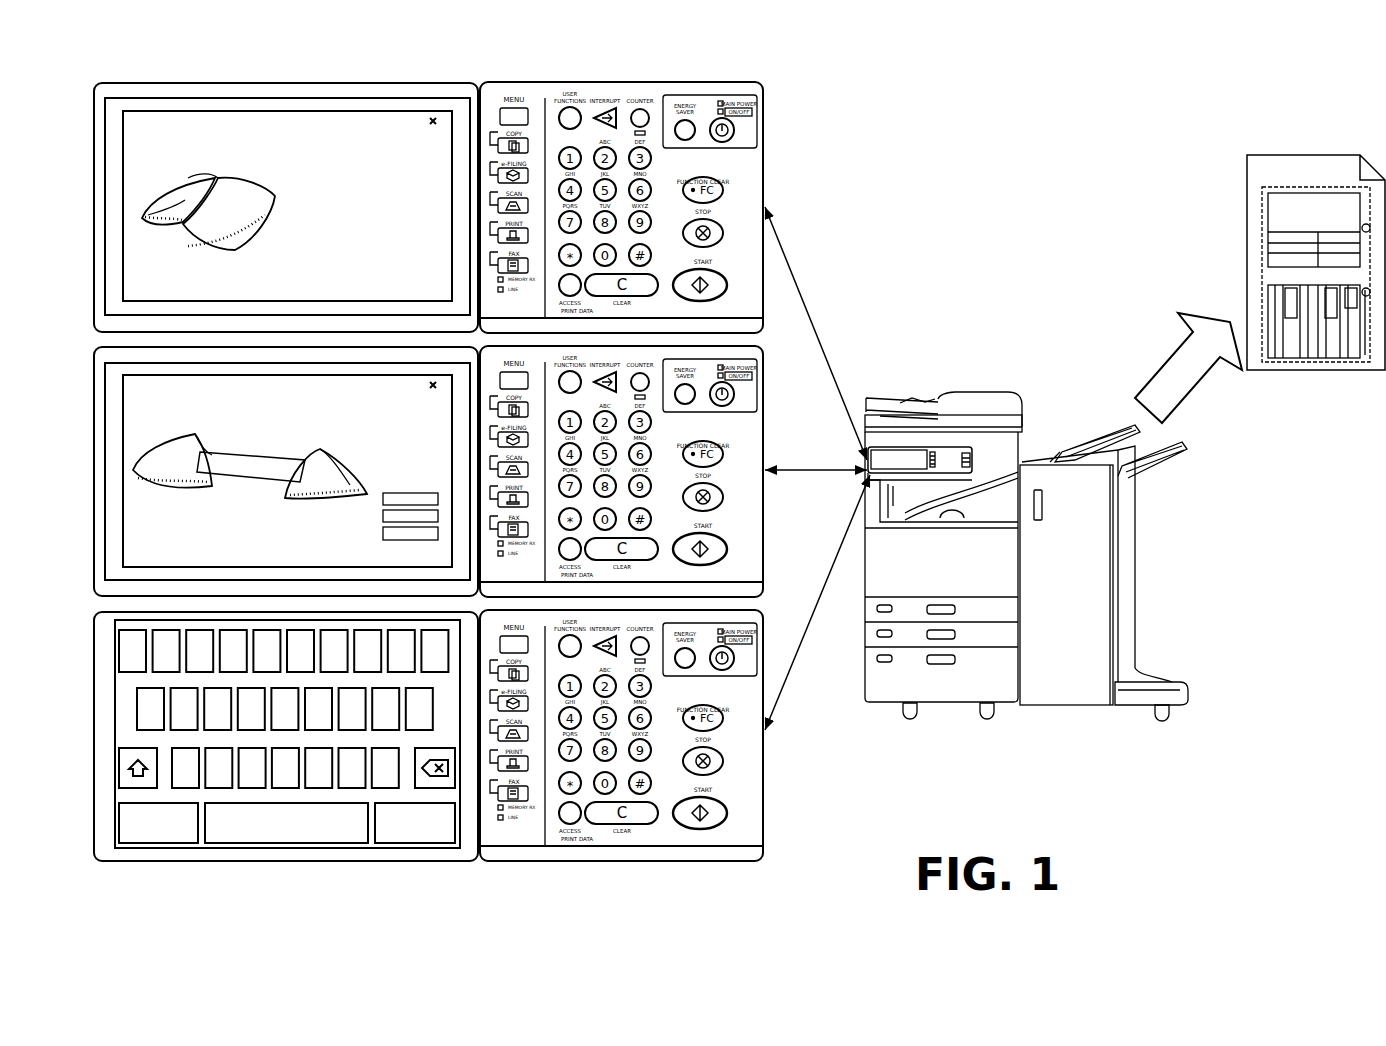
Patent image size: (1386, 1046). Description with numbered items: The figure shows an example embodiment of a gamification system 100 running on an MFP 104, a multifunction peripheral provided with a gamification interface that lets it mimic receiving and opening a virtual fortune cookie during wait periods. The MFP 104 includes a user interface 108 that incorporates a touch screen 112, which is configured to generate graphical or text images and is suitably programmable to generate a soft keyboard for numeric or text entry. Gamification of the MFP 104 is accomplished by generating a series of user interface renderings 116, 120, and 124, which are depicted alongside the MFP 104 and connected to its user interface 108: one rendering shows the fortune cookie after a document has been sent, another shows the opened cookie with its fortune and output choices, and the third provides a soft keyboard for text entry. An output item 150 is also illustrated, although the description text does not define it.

The gamification system 100 is at (1278, 78).
The MFP 104 is at (1137, 597).
The user interface 108 is at (980, 451).
The touch screen 112 is at (913, 455).
The user interface rendering 116 is at (763, 158).
The user interface rendering 120 is at (763, 425).
The user interface rendering 124 is at (763, 785).
The output document / fortune output options (print, text, e-mail, post) 150 is at (1247, 243).